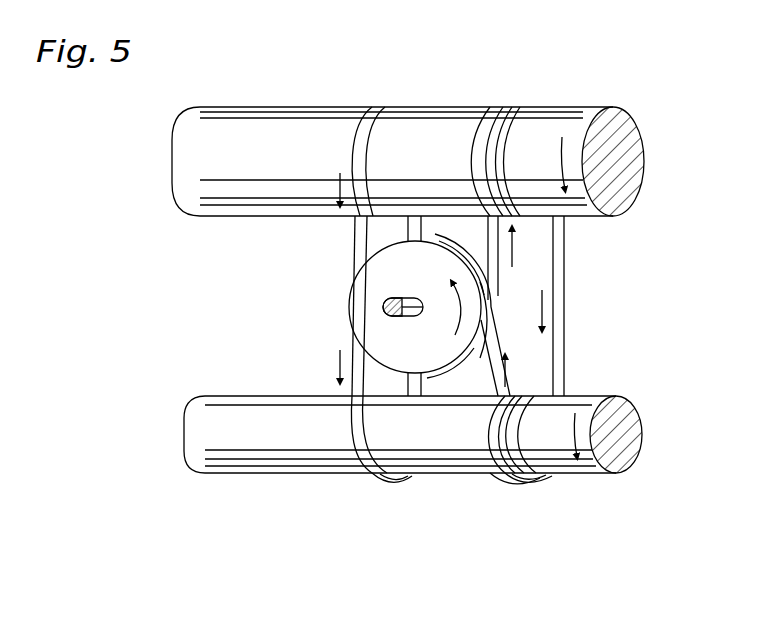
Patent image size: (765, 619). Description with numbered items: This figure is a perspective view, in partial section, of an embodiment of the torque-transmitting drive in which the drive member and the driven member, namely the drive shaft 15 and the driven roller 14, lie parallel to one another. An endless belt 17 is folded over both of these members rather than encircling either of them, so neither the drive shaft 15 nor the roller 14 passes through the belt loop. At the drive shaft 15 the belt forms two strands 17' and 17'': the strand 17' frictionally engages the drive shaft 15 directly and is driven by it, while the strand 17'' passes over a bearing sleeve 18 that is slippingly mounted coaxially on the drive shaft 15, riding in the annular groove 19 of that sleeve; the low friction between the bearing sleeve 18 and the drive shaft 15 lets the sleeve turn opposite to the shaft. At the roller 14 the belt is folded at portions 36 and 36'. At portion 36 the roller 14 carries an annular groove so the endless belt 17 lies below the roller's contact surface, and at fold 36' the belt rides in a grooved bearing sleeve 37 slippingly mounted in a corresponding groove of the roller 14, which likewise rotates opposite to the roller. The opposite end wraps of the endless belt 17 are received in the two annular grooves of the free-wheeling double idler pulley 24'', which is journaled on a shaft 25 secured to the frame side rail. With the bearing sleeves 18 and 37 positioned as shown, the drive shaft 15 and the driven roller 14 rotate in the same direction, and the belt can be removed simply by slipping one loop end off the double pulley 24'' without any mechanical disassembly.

The driven conveyor roller 14 is at (254, 116).
The drive shaft 15 is at (254, 417).
The endless belt 17 is at (448, 284).
The belt strand 17' is at (358, 457).
The belt strand 17'' is at (521, 507).
The bearing sleeve 18 is at (560, 478).
The annular groove 19 is at (501, 478).
The idler pulley 24'' is at (382, 306).
The shaft 25 is at (408, 298).
The belt fold portion 36 is at (357, 136).
The belt fold portion 36' is at (481, 136).
The grooved bearing sleeve 37 is at (512, 108).